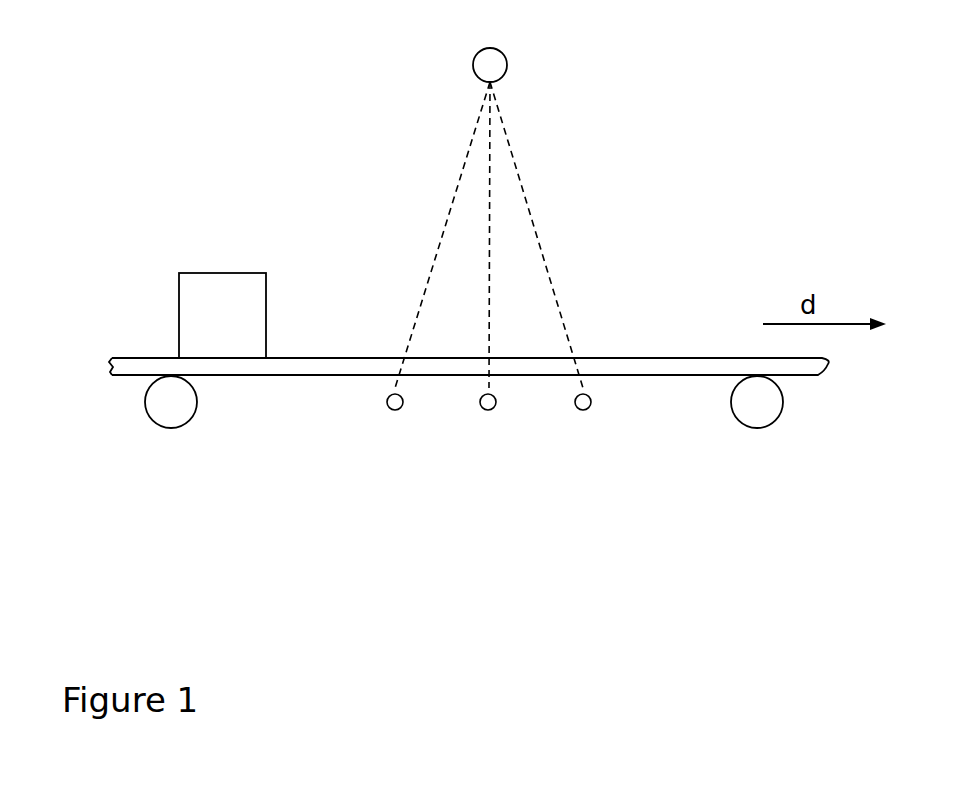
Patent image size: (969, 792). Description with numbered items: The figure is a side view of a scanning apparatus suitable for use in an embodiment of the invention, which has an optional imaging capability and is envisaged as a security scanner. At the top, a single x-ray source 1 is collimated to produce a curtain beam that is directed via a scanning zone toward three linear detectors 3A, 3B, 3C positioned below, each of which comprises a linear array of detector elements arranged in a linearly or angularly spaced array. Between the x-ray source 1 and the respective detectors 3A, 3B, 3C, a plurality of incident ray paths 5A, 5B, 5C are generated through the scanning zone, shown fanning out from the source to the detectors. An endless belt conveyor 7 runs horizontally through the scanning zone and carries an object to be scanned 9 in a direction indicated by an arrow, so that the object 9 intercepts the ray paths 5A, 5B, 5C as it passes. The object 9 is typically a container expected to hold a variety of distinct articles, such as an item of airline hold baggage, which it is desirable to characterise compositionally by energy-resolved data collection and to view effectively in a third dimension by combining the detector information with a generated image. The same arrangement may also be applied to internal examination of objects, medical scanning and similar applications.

The x-ray source 1 is at (472, 67).
The linear detector 3A is at (387, 433).
The linear detector 3B is at (486, 433).
The linear detector 3C is at (584, 433).
The ray path 5A is at (455, 205).
The ray path 5B is at (490, 150).
The ray path 5C is at (540, 238).
The endless belt conveyor 7 is at (140, 358).
The object to be scanned 9 is at (180, 272).